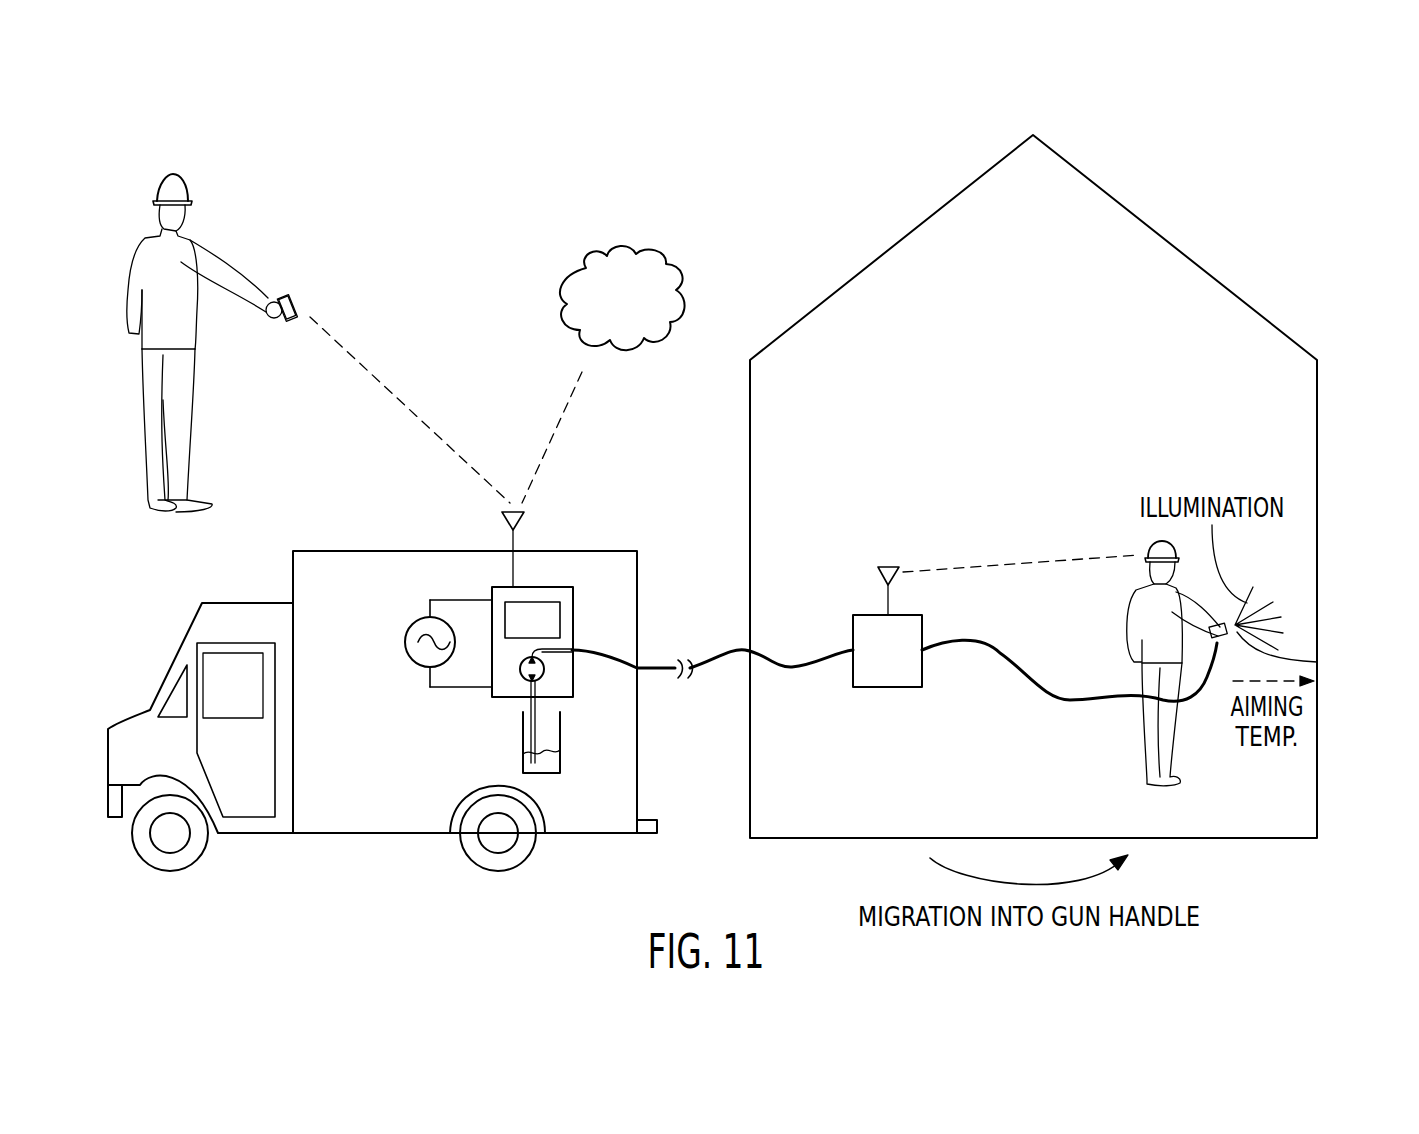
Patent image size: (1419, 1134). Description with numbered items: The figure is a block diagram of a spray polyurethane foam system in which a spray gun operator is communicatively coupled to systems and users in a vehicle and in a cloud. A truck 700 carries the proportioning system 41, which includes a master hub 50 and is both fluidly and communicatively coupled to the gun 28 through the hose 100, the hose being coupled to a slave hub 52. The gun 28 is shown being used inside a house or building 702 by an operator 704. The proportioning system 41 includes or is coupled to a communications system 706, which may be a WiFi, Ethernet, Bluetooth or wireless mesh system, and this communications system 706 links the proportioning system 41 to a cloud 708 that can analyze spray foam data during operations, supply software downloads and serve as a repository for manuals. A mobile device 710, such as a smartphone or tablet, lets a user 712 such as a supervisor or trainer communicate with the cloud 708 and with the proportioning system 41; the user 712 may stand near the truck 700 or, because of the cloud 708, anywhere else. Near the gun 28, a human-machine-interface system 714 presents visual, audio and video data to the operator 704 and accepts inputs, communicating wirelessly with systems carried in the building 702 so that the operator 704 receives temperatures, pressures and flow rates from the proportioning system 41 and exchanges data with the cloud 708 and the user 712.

The user 712 is at (133, 168).
The mobile device 710 is at (296, 300).
The cloud 708 is at (666, 254).
The communications system 706 is at (494, 525).
The truck 700 is at (150, 648).
The proportioning system 41 is at (492, 700).
The master hub 50 is at (577, 653).
The hose 100 is at (797, 668).
The building 702 is at (891, 247).
The human-machine-interface system 714 is at (922, 668).
The slave hub 52 is at (853, 650).
The operator 704 is at (1122, 517).
The gun 28 is at (1317, 662).